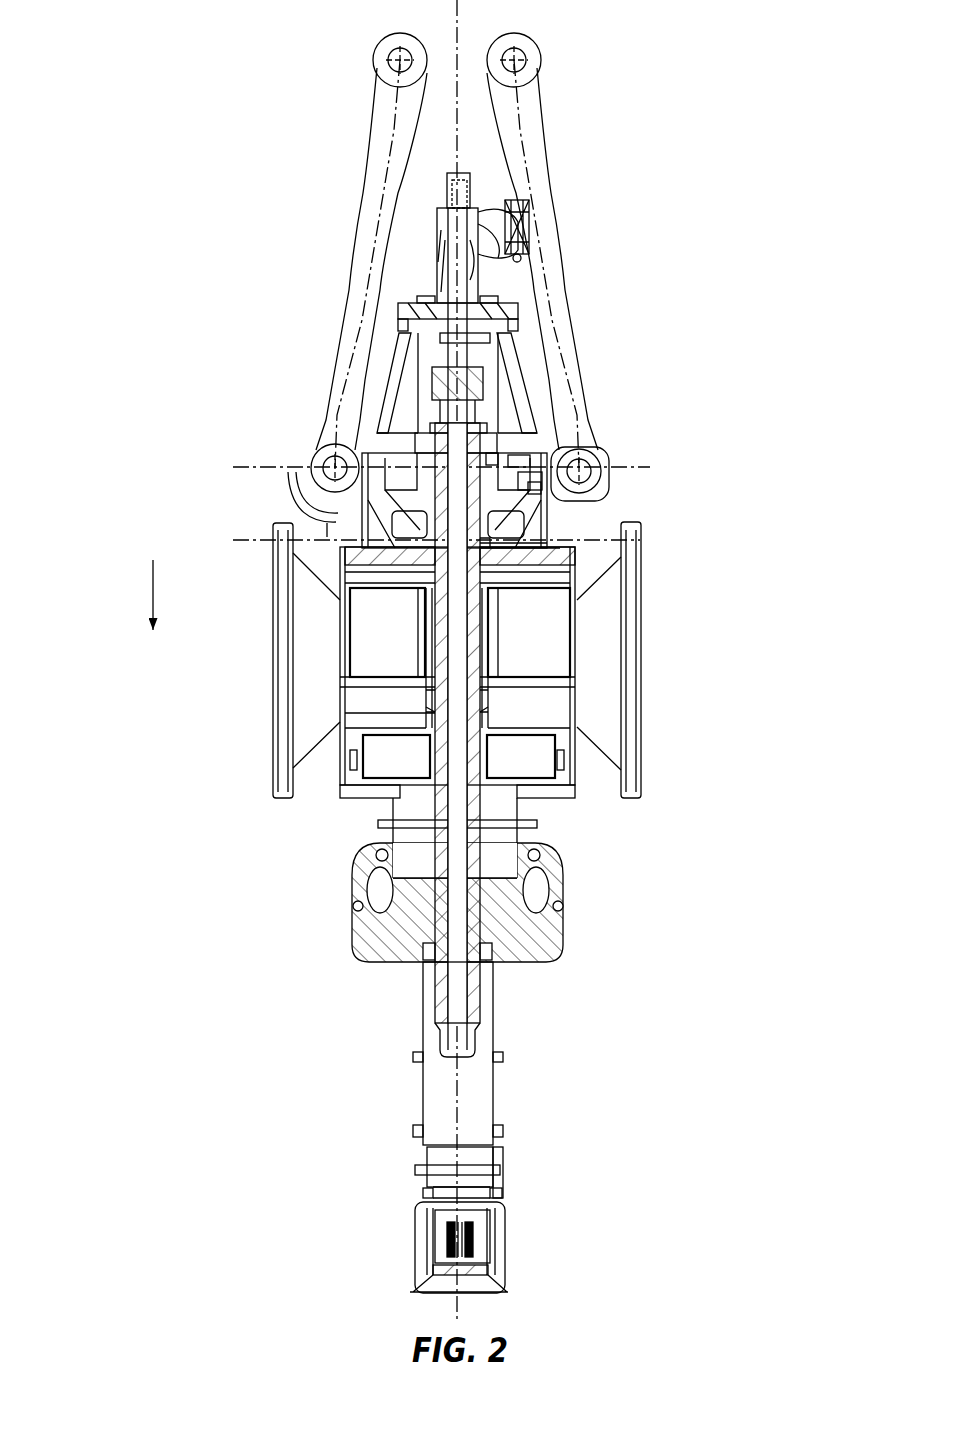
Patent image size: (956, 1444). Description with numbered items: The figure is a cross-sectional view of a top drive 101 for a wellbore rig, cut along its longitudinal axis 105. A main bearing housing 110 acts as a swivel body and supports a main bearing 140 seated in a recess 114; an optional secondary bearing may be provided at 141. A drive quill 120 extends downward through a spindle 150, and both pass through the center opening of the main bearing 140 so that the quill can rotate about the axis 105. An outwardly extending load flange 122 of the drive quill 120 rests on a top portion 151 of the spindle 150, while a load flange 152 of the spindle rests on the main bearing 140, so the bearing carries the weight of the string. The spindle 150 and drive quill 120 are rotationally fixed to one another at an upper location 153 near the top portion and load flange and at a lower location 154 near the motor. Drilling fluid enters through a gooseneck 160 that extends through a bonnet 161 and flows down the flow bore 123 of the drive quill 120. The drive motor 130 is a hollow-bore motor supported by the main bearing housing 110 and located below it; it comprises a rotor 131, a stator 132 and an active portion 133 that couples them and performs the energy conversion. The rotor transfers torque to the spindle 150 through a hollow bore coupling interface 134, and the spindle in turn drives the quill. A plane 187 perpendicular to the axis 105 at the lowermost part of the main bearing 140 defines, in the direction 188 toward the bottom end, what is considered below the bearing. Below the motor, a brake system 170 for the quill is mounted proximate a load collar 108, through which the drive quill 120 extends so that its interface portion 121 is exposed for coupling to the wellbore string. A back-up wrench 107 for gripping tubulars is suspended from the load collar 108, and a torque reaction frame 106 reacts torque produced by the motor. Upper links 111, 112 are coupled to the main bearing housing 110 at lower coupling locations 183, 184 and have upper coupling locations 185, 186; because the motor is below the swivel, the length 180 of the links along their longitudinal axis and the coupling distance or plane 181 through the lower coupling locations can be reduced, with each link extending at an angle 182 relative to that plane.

The top drive 101 is at (238, 48).
The axis 105 is at (458, 1110).
The torque reaction frame 106 is at (280, 771).
The back-up wrench 107 is at (512, 1233).
The load collar 108 is at (566, 930).
The main bearing housing 110 is at (385, 548).
The upper link 111 is at (333, 247).
The upper link 112 is at (591, 251).
The recess 114 is at (534, 481).
The drive quill 120 is at (572, 708).
The interface portion 121 is at (472, 1038).
The load flange 122 is at (497, 440).
The flow bore 123 is at (450, 689).
The drive motor 130 is at (537, 664).
The rotor 131 is at (496, 622).
The stator 132 is at (493, 560).
The active portion 133 is at (535, 653).
The coupling interface 134 is at (494, 605).
The main bearing 140 is at (487, 553).
The secondary bearing location 141 is at (521, 462).
The spindle 150 is at (497, 548).
The top portion 151 is at (493, 462).
The load flange 152 is at (507, 508).
The upper coupling location 153 is at (538, 488).
The lower coupling location 154 is at (433, 710).
The gooseneck 160 is at (496, 230).
The bonnet 161 is at (395, 365).
The brake system 170 is at (510, 804).
The length 180 is at (368, 260).
The coupling distance 181 is at (258, 467).
The angle 182 is at (300, 508).
The lower coupling location 183 is at (332, 464).
The lower coupling location 184 is at (556, 469).
The upper coupling location 185 is at (396, 52).
The upper coupling location 186 is at (517, 52).
The plane 187 is at (258, 543).
The direction 188 is at (152, 590).